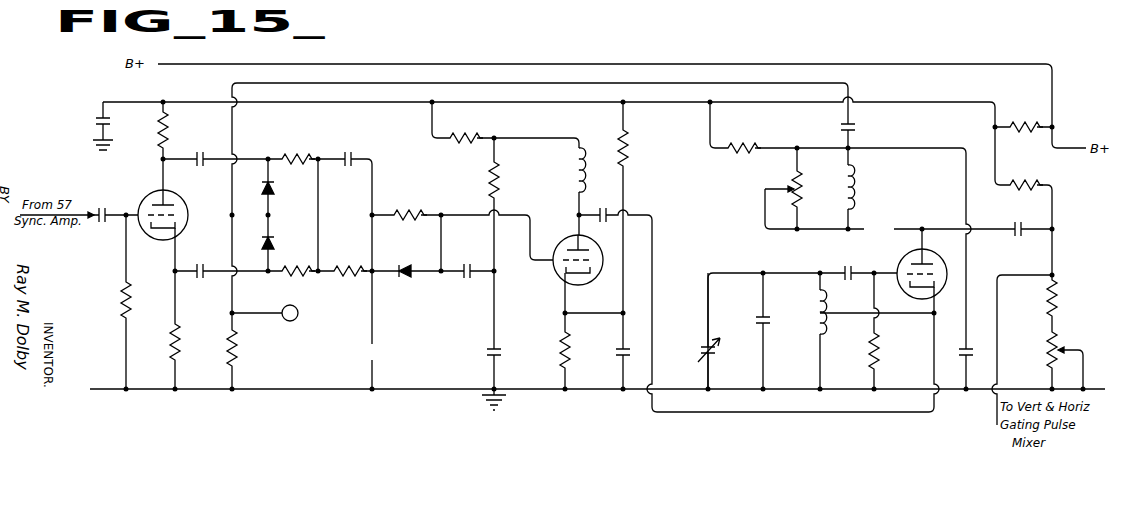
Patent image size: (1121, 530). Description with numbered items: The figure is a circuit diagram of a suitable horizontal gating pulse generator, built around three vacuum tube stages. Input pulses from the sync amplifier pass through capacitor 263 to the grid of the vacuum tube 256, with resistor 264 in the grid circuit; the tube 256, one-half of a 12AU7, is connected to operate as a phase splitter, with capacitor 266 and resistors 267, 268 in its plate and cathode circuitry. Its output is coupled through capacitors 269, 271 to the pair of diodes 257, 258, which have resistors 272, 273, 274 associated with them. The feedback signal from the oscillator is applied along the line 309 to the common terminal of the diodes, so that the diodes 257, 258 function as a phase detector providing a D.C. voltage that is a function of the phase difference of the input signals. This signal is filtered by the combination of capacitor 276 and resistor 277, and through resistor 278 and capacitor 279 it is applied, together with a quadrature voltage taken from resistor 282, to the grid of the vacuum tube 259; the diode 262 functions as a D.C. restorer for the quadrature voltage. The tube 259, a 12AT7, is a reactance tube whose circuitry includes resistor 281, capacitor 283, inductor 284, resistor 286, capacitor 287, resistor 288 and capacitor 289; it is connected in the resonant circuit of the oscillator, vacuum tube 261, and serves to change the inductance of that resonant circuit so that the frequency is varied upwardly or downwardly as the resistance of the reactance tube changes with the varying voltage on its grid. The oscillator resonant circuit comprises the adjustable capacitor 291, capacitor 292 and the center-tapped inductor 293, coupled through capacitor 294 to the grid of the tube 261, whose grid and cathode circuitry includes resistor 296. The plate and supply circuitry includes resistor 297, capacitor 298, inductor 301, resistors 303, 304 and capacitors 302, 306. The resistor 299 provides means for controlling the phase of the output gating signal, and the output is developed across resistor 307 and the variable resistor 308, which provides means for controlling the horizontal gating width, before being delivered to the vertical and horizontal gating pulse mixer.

The vacuum tube 256 is at (181, 205).
The diode 257 is at (276, 186).
The diode 258 is at (276, 249).
The vacuum tube 259 is at (567, 237).
The vacuum tube 261 is at (900, 265).
The diode 262 is at (406, 280).
The capacitor 263 is at (104, 208).
The resistor 264 is at (120, 298).
The capacitor 266 is at (92, 124).
The resistor 267 is at (172, 122).
The resistor 268 is at (181, 327).
The capacitor 269 is at (200, 150).
The capacitor 271 is at (203, 262).
The resistor 272 is at (238, 341).
The resistor 273 is at (291, 152).
The resistor 274 is at (290, 283).
The capacitor 276 is at (350, 152).
The resistor 277 is at (347, 283).
The resistor 278 is at (402, 208).
The capacitor 279 is at (475, 254).
The resistor 281 is at (460, 132).
The resistor 282 is at (502, 182).
The capacitor 283 is at (485, 348).
The inductor 284 is at (572, 145).
The resistor 286 is at (555, 342).
The capacitor 287 is at (598, 210).
The resistor 288 is at (632, 165).
The capacitor 289 is at (612, 348).
The capacitor 291 is at (700, 350).
The capacitor 292 is at (757, 312).
The inductor 293 is at (810, 340).
The capacitor 294 is at (843, 267).
The resistor 296 is at (882, 355).
The resistor 297 is at (752, 145).
The capacitor 298 is at (858, 122).
The resistor 299 is at (785, 186).
The inductor 301 is at (860, 183).
The capacitor 302 is at (972, 350).
The resistor 303 is at (1018, 118).
The resistor 304 is at (1030, 175).
The capacitor 306 is at (1013, 236).
The resistor 307 is at (1060, 289).
The variable resistor 308 is at (1060, 340).
The line 309 is at (590, 85).